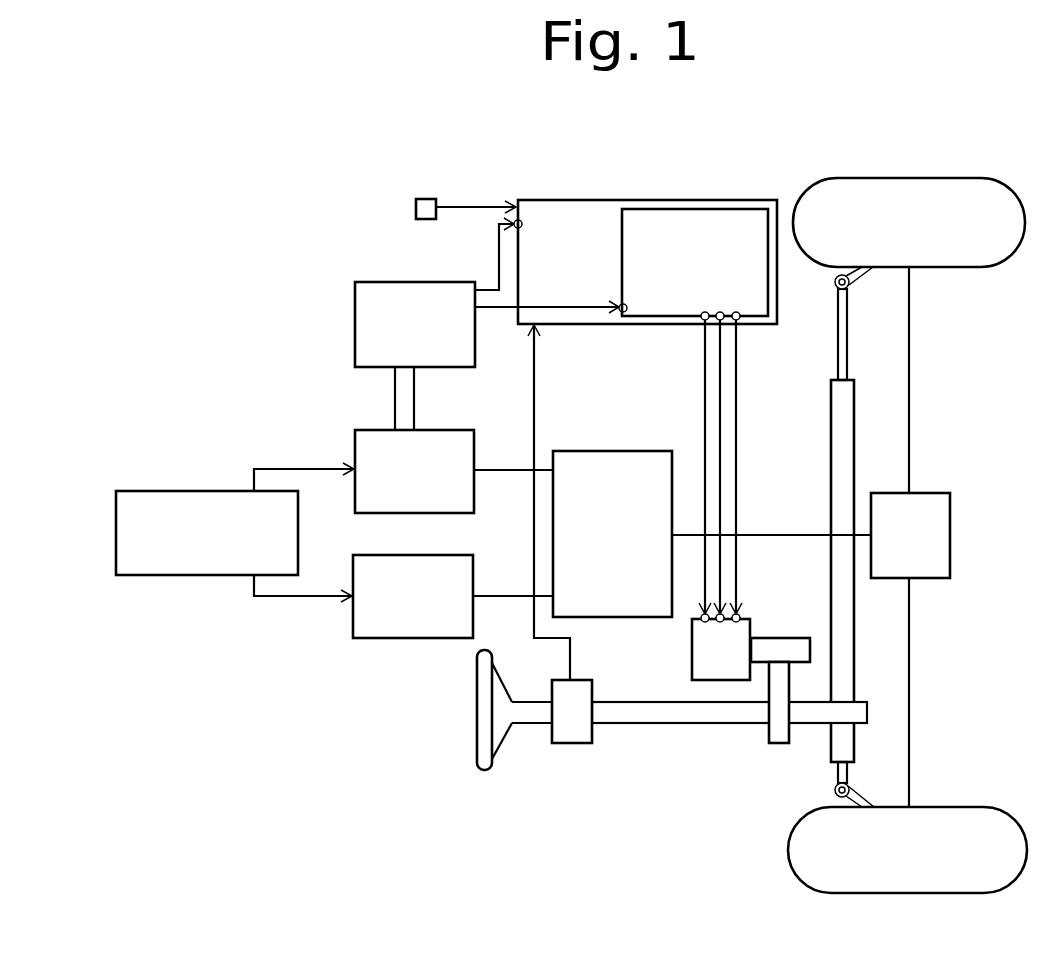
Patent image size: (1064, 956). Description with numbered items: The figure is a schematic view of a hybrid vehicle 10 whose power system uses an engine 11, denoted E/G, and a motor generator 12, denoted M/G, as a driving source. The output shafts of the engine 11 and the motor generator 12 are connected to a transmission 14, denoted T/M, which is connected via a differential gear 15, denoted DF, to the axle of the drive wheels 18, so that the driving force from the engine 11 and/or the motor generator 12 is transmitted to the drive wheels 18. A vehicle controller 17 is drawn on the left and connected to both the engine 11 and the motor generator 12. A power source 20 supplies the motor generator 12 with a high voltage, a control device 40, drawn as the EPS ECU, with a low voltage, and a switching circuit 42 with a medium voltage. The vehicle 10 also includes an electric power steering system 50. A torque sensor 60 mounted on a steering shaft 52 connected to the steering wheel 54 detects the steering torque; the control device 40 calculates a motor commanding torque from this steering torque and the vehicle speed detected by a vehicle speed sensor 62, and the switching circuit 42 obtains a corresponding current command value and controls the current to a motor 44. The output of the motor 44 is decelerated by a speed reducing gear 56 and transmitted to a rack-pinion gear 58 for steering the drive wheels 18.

The hybrid vehicle 10 is at (275, 225).
The engine 11 is at (368, 638).
The motor generator 12 is at (470, 430).
The transmission 14 is at (586, 451).
The differential gear 15 is at (923, 493).
The vehicle controller 17 is at (140, 491).
The drive wheels 18 is at (985, 267).
The power source 20 is at (368, 282).
The control device 40 is at (558, 200).
The switching circuit 42 is at (668, 209).
The motor 44 is at (692, 650).
The electric power steering system 50 is at (665, 551).
The steering shaft 52 is at (538, 723).
The steering wheel 54 is at (484, 770).
The speed reducing gear 56 is at (786, 638).
The rack-pinion gear 58 is at (805, 743).
The torque sensor 60 is at (571, 743).
The vehicle speed sensor 62 is at (416, 207).